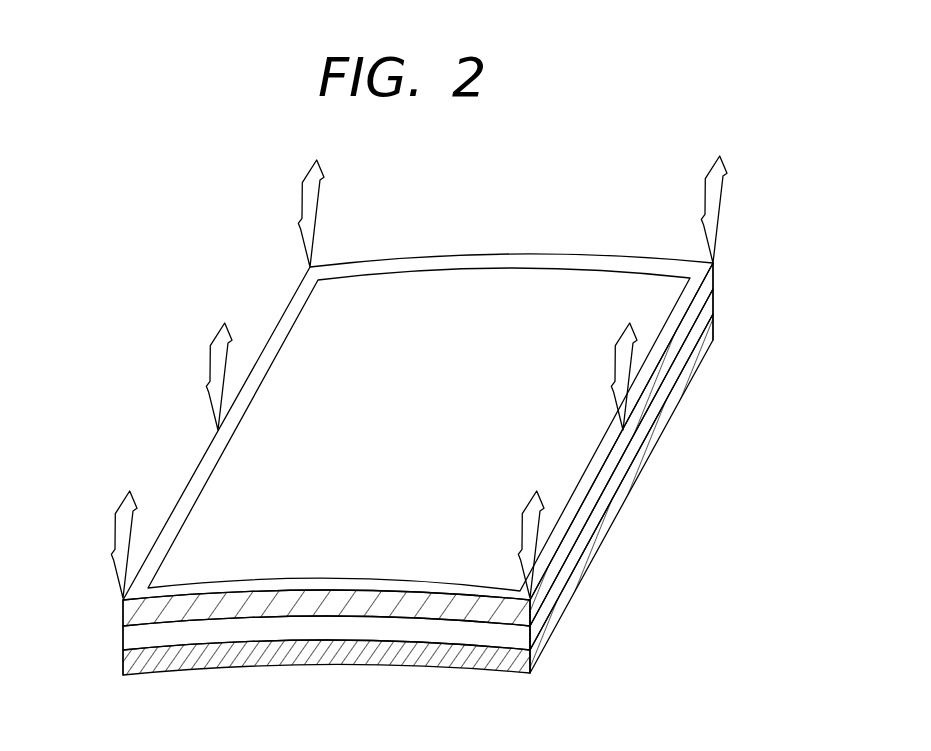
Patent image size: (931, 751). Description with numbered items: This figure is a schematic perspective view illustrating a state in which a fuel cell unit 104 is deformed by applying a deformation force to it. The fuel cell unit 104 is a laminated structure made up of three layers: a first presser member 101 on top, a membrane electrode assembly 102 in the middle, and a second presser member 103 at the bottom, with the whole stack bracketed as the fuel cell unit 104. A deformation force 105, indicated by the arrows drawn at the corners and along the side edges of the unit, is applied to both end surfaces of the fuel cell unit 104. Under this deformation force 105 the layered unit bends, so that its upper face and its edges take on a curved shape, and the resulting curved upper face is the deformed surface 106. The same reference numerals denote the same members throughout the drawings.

The first presser member 101 is at (123, 605).
The membrane electrode assembly 102 is at (125, 638).
The second presser member 103 is at (122, 662).
The fuel cell unit 104 is at (730, 253).
The deformation force 105 is at (223, 327).
The deformed surface 106 is at (432, 372).